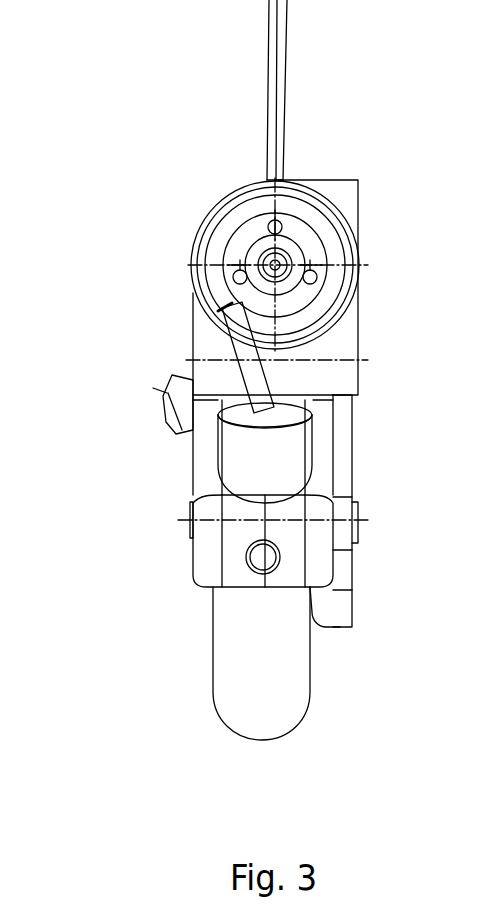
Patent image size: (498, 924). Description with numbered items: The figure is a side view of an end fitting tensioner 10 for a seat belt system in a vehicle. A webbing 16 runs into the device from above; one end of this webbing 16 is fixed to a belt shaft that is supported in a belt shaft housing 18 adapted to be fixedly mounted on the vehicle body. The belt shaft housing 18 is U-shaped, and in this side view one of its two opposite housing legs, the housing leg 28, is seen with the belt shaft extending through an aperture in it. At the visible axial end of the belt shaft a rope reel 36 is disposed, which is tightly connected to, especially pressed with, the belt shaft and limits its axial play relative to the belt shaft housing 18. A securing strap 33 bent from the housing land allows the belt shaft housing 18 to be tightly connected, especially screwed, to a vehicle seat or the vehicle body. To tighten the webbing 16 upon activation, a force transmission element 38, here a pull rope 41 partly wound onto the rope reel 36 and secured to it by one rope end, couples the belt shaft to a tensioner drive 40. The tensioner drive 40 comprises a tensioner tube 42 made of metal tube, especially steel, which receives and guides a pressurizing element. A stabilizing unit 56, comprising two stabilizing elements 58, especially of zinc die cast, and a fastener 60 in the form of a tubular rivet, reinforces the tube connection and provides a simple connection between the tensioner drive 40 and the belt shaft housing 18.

The end fitting tensioner 10 is at (253, 370).
The webbing 16 is at (283, 83).
The belt shaft housing 18 is at (337, 348).
The housing leg 28 is at (337, 190).
The rope reel 36 is at (313, 243).
The force transmission element 38 is at (174, 357).
The pull rope 41 is at (238, 342).
The tensioner drive 40 is at (253, 567).
The tensioner tube 42 is at (288, 682).
The stabilizing element 58 is at (207, 552).
The stabilizing unit 56 is at (293, 593).
The securing strap 33 is at (340, 598).
The fastener 60 is at (363, 512).